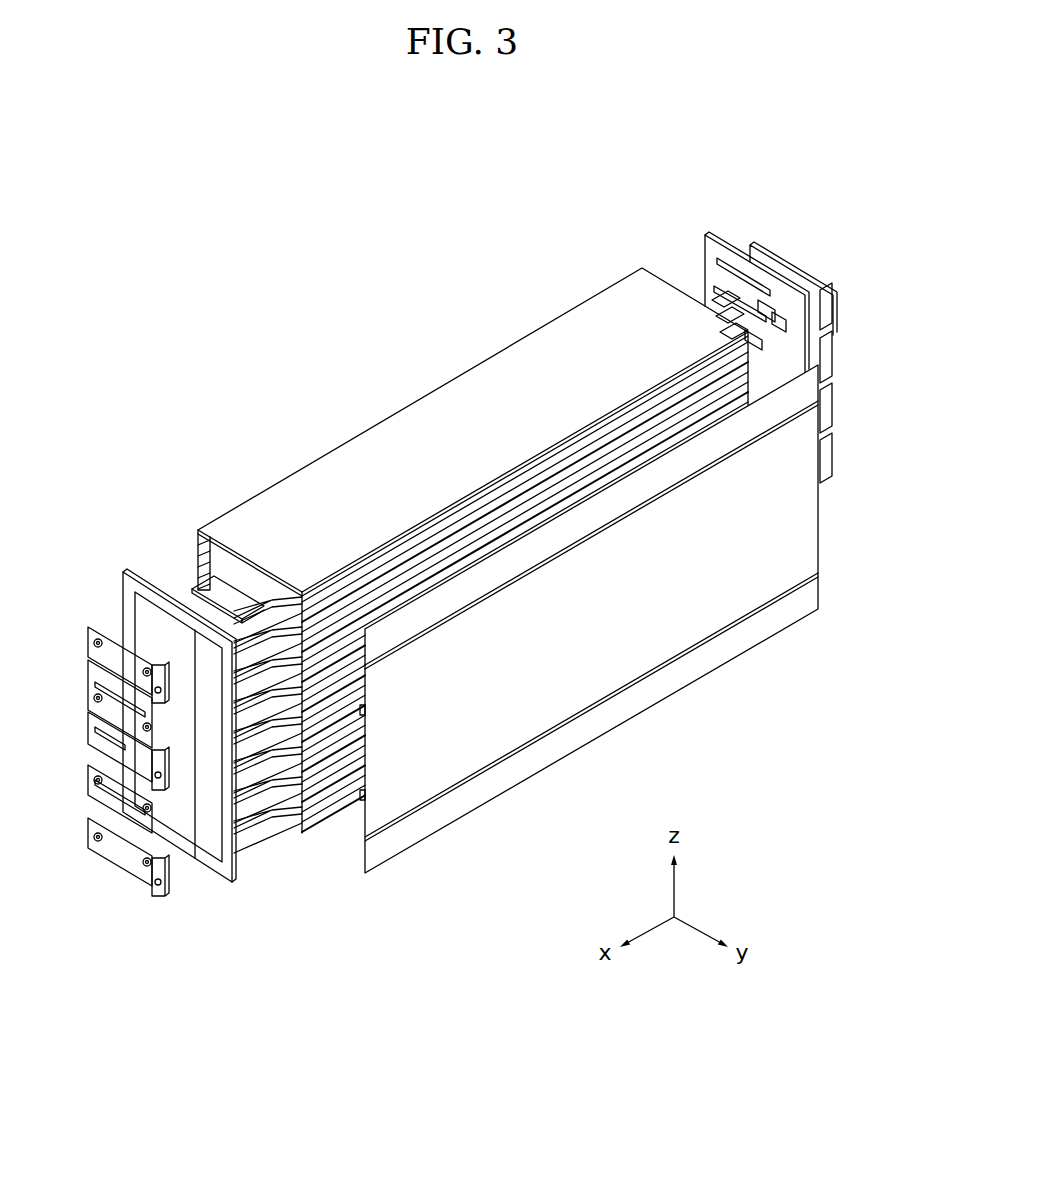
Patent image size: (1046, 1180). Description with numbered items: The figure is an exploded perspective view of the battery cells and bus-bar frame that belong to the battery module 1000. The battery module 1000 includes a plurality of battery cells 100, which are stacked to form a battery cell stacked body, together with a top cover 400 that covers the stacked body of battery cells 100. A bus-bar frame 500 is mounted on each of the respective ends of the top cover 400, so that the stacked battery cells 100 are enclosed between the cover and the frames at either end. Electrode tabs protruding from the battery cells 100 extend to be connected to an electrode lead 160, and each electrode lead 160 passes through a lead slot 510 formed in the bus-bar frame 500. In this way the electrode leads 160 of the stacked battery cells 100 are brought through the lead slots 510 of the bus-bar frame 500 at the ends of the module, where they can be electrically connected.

The battery module 1000 is at (368, 391).
The battery cells 100 is at (322, 832).
The electrode lead 160 is at (228, 598).
The top cover 400 is at (648, 628).
The bus-bar frame 500 is at (146, 541).
The lead slot 510 is at (125, 827).